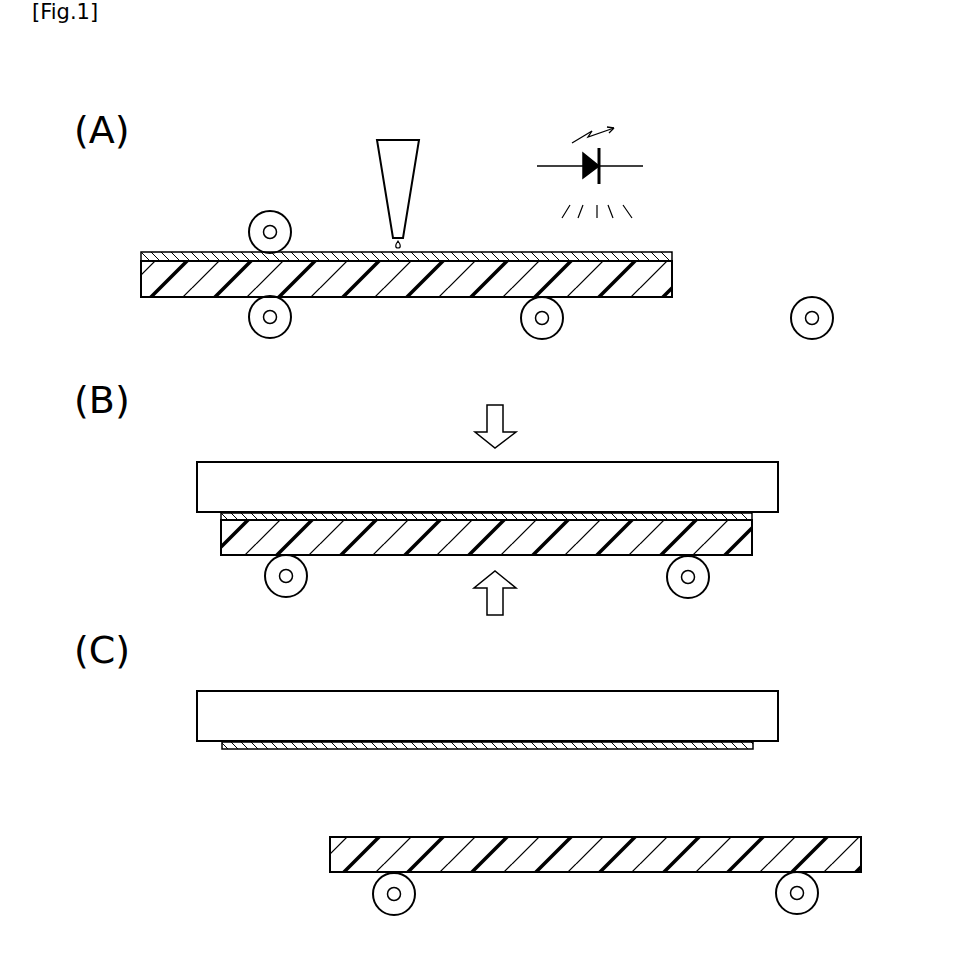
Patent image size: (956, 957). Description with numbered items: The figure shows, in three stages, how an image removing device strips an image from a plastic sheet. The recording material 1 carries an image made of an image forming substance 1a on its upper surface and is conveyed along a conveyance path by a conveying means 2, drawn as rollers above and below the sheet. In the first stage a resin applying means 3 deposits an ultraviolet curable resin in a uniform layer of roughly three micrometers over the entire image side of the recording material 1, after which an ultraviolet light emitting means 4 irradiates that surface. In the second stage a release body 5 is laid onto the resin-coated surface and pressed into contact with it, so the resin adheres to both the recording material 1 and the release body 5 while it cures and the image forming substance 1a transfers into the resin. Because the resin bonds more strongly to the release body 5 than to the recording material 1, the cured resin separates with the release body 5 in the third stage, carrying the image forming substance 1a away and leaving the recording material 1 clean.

The recording material 1 is at (143, 271).
The image forming substance 1a is at (141, 256).
The conveying means 2 is at (254, 218).
The resin applying means 3 is at (378, 151).
The ultraviolet light emitting means 4 is at (622, 165).
The release body 5 is at (278, 461).